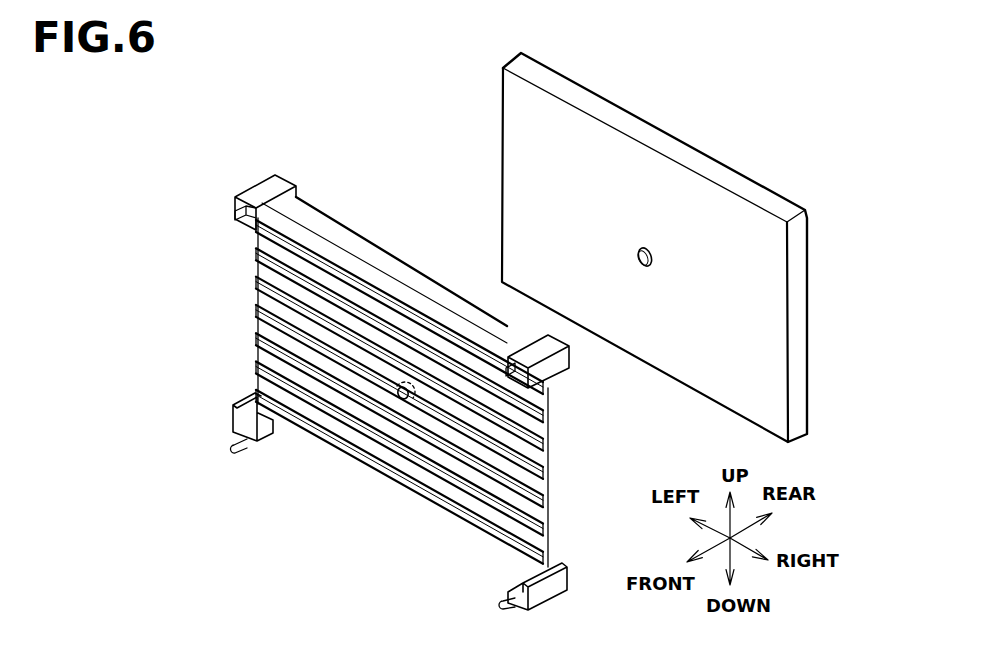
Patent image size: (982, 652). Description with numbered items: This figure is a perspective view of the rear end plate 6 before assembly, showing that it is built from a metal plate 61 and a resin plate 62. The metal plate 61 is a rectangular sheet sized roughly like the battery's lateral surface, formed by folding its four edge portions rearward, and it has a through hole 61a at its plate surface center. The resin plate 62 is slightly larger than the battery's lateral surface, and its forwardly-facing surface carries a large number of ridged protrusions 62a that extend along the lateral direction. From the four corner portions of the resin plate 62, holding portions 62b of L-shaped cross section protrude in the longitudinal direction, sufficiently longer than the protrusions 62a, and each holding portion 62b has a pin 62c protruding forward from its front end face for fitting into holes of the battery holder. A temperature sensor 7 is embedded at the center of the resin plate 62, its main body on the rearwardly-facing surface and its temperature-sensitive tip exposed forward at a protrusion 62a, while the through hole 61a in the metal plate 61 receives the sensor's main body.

The end plate 6 is at (355, 129).
The temperature sensor 7 is at (402, 388).
The metal plate 61 is at (654, 251).
The through hole 61a is at (652, 249).
The resin plate 62 is at (390, 381).
The ridged protrusions 62a is at (409, 492).
The holding portions 62b is at (263, 190).
The pins 62c is at (236, 213).